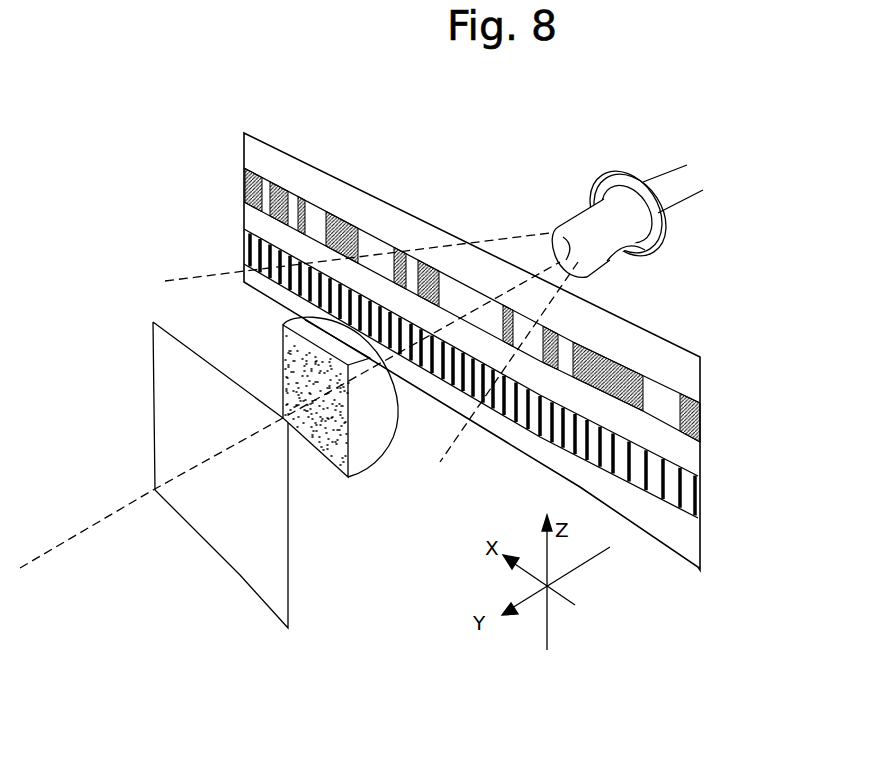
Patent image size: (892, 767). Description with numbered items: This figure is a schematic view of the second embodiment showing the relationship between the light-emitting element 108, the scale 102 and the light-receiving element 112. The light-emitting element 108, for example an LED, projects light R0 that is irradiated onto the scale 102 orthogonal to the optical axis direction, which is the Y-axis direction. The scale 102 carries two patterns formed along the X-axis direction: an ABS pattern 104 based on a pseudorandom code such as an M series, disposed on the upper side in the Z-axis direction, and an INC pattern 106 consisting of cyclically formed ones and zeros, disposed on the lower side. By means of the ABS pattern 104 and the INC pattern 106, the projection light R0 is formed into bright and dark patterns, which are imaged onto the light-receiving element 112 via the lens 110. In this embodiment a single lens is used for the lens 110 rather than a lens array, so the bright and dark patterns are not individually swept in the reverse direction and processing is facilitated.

The scale 102 is at (374, 199).
The ABS pattern 104 is at (702, 413).
The INC pattern 106 is at (687, 500).
The light-emitting element 108 is at (655, 247).
The lens 110 is at (362, 437).
The light-receiving element 112 is at (280, 565).
The projection light R0 is at (512, 232).